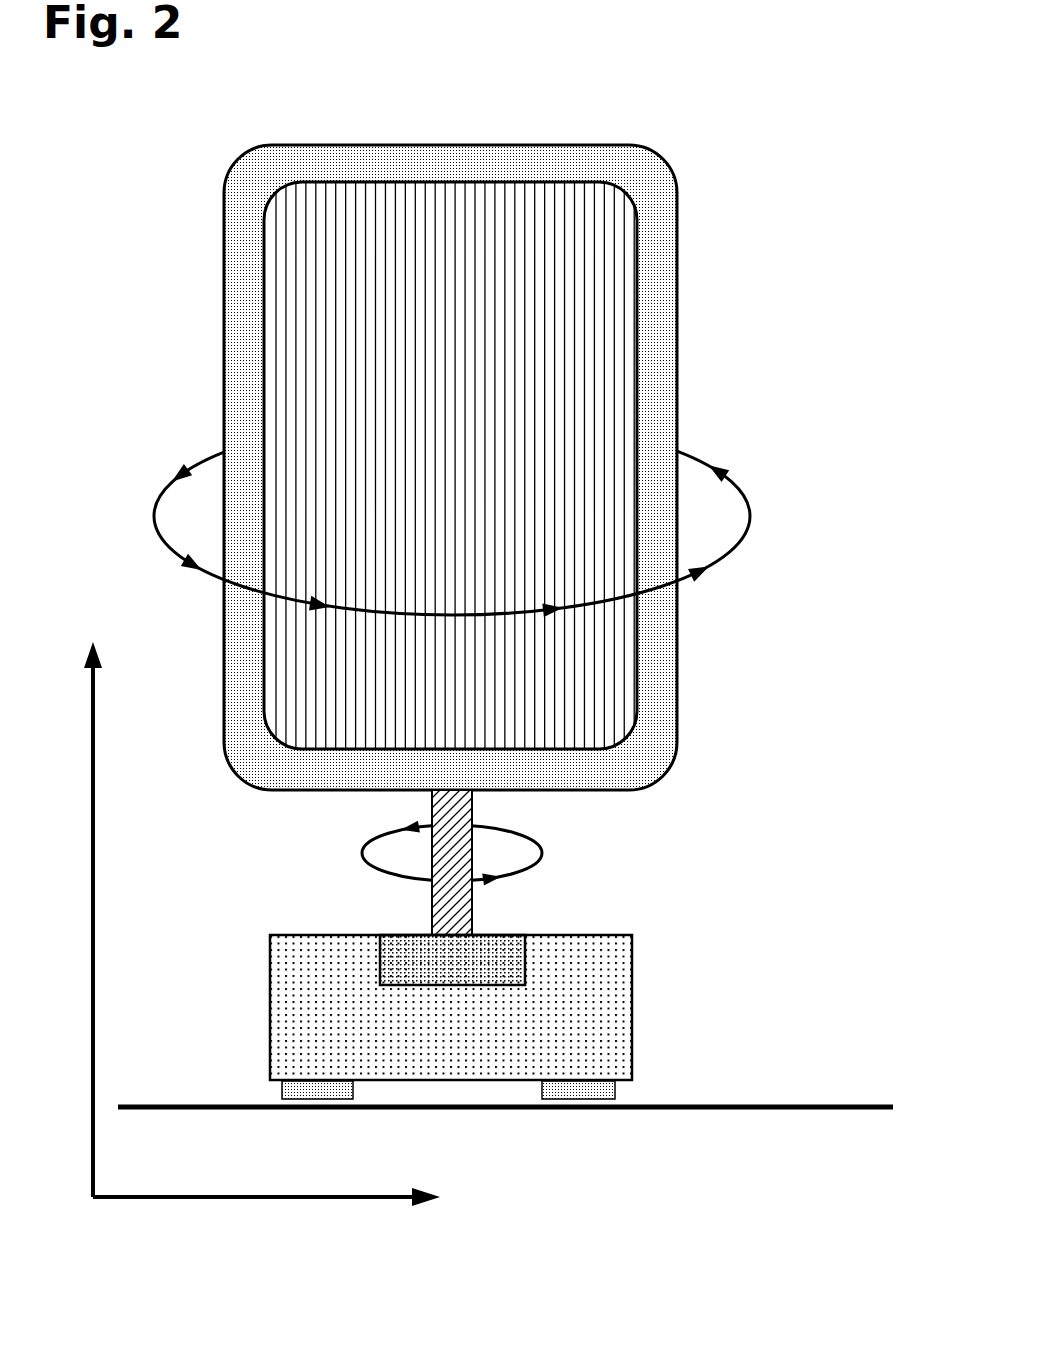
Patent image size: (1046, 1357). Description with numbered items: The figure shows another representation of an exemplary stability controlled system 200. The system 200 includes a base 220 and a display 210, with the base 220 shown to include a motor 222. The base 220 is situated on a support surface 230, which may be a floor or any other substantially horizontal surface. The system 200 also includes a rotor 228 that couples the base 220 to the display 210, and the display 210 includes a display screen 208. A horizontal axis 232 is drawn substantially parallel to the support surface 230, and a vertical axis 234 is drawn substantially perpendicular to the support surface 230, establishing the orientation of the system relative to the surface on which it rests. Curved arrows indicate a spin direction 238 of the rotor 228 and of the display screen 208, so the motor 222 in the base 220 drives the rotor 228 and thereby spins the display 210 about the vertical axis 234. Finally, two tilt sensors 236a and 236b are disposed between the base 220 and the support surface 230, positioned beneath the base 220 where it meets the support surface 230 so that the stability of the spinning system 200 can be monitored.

The system 200 is at (859, 57).
The display screen 208 is at (479, 248).
The display 210 is at (486, 451).
The base 220 is at (488, 1045).
The motor 222 is at (506, 974).
The rotor 228 is at (432, 917).
The support surface 230 is at (822, 1104).
The horizontal axis 232 is at (215, 1192).
The vertical axis 234 is at (91, 838).
The tilt sensor 236a is at (343, 1100).
The tilt sensor 236b is at (585, 1100).
The spin direction 238 is at (745, 548).